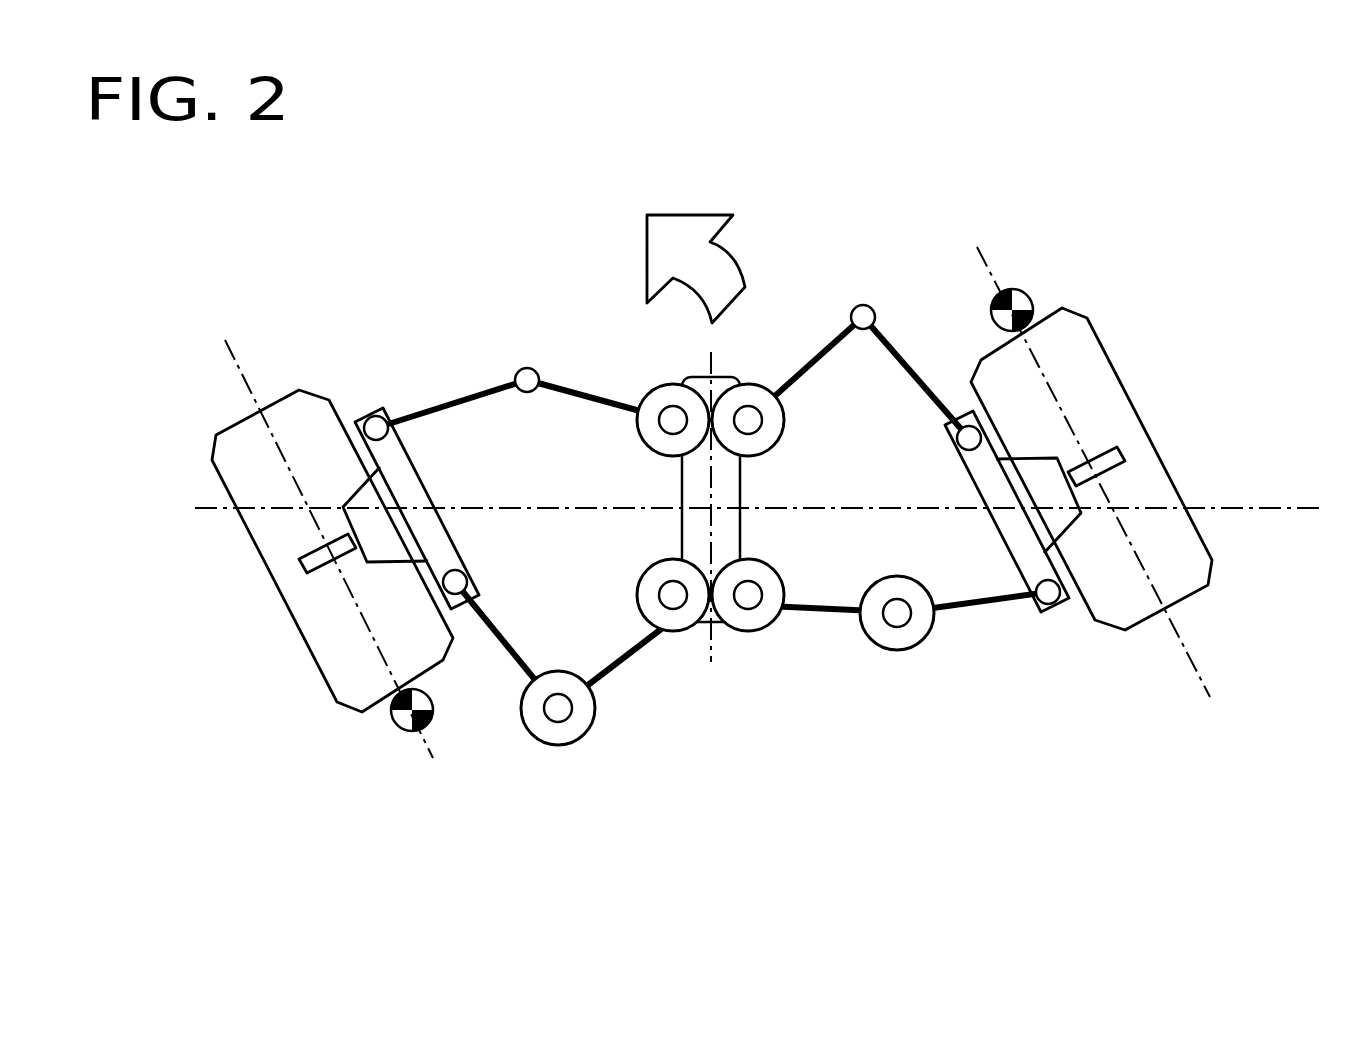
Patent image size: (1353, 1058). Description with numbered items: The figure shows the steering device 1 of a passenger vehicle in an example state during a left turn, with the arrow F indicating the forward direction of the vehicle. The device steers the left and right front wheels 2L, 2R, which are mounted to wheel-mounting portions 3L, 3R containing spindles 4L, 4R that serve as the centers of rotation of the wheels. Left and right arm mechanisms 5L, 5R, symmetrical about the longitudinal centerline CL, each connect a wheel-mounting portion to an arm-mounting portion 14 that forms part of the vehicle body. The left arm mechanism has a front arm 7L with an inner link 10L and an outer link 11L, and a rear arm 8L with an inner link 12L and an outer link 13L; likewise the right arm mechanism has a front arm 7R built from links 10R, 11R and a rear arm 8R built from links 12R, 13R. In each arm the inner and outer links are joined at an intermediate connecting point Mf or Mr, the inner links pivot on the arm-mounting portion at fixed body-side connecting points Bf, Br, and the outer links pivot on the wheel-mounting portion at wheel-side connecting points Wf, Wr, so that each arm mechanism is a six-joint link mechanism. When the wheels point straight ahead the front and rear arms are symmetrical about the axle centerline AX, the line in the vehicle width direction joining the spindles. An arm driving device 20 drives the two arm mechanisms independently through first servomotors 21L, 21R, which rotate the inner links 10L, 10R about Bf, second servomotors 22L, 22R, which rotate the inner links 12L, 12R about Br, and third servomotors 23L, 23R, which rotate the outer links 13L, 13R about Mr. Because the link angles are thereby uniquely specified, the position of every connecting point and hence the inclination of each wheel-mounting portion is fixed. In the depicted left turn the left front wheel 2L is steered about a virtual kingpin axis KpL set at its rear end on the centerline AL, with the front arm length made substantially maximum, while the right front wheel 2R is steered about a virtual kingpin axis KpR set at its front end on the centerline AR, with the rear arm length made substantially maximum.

The steering device 1 is at (977, 185).
The left front wheel 2L is at (212, 452).
The right front wheel 2R is at (1110, 360).
The wheel-mounting portion 3L is at (421, 482).
The wheel-mounting portion 3R is at (975, 488).
The spindle 4L is at (302, 560).
The spindle 4R is at (1122, 455).
The left arm mechanism 5L is at (573, 292).
The right arm mechanism 5R is at (838, 272).
The front arm 7L is at (482, 355).
The front arm 7R is at (900, 280).
The rear arm 8L is at (503, 705).
The rear arm 8R is at (960, 657).
The inner link 10L is at (570, 392).
The inner link 10R is at (828, 348).
The outer link 11L is at (427, 412).
The outer link 11R is at (893, 352).
The inner link 12L is at (627, 660).
The inner link 12R is at (818, 615).
The outer link 13L is at (505, 650).
The outer link 13R is at (982, 603).
The arm-mounting portion 14 is at (690, 377).
The arm driving device 20 is at (533, 760).
The first servomotor 21L is at (652, 387).
The first servomotor 21R is at (774, 408).
The second servomotor 22L is at (640, 613).
The second servomotor 22R is at (783, 590).
The third servomotor 23L is at (592, 732).
The third servomotor 23R is at (882, 650).
The intermediate connecting point Mf is at (526, 367).
The intermediate connecting point Mr is at (567, 722).
The body-side connecting point Bf is at (663, 432).
The body-side connecting point Br is at (665, 583).
The wheel-side connecting point Wf is at (388, 428).
The wheel-side connecting point Wr is at (467, 583).
The virtual kingpin axis KpL is at (400, 727).
The virtual kingpin axis KpR is at (1033, 303).
The centerline AL is at (228, 345).
The centerline AR is at (990, 268).
The axle centerline AX is at (1265, 507).
The longitudinal centerline CL is at (731, 362).
The forward direction F is at (687, 252).